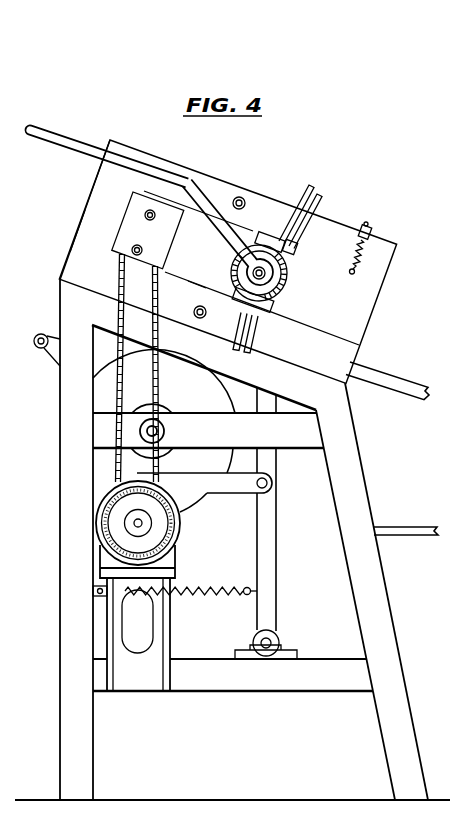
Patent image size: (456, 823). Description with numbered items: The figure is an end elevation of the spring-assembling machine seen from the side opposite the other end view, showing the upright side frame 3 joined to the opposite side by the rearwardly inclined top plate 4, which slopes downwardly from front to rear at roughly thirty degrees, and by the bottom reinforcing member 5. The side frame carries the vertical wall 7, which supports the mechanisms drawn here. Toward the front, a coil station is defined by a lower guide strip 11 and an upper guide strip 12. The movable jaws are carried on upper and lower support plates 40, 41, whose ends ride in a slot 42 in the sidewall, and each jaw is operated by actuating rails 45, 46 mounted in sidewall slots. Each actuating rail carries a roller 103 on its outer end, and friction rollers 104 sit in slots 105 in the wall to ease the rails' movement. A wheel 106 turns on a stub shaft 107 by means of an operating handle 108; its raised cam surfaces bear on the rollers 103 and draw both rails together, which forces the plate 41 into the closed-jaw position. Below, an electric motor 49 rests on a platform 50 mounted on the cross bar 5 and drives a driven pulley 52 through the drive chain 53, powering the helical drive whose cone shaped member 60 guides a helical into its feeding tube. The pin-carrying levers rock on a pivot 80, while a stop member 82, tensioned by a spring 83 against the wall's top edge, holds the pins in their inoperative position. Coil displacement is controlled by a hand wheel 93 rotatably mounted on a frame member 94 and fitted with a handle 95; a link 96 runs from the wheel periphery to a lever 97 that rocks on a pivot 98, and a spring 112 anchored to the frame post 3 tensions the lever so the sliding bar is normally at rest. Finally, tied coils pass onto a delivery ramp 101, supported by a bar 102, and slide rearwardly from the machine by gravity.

The side frame 3 is at (61, 573).
The top plate 4 is at (305, 373).
The bottom reinforcing member 5 is at (212, 684).
The vertical wall 7 is at (367, 225).
The lower guide strip 11 is at (77, 234).
The upper guide strip 12 is at (96, 181).
The upper support plate 40 is at (256, 222).
The lower support plate 41 is at (197, 289).
The slot 42 is at (185, 186).
The actuating rail 45 is at (287, 228).
The actuating rail 46 is at (246, 316).
The electric motor 49 is at (180, 537).
The platform 50 is at (107, 608).
The driven pulley 52 is at (113, 263).
The drive chain 53 is at (118, 388).
The cone shaped member 60 is at (132, 248).
The pivot 80 is at (240, 197).
The stop member 82 is at (373, 231).
The spring 83 is at (354, 275).
The hand wheel 93 is at (196, 394).
The frame member 94 is at (286, 440).
The handle 95 is at (50, 354).
The link 96 is at (210, 492).
The lever 97 is at (272, 574).
The pivot 98 is at (257, 640).
The delivery ramp 101 is at (397, 373).
The bar 102 is at (407, 534).
The roller 103 is at (285, 290).
The friction roller 104 is at (314, 189).
The slot 105 is at (322, 198).
The wheel 106 is at (280, 283).
The stub shaft 107 is at (272, 268).
The operating handle 108 is at (97, 162).
The spring 112 is at (192, 590).